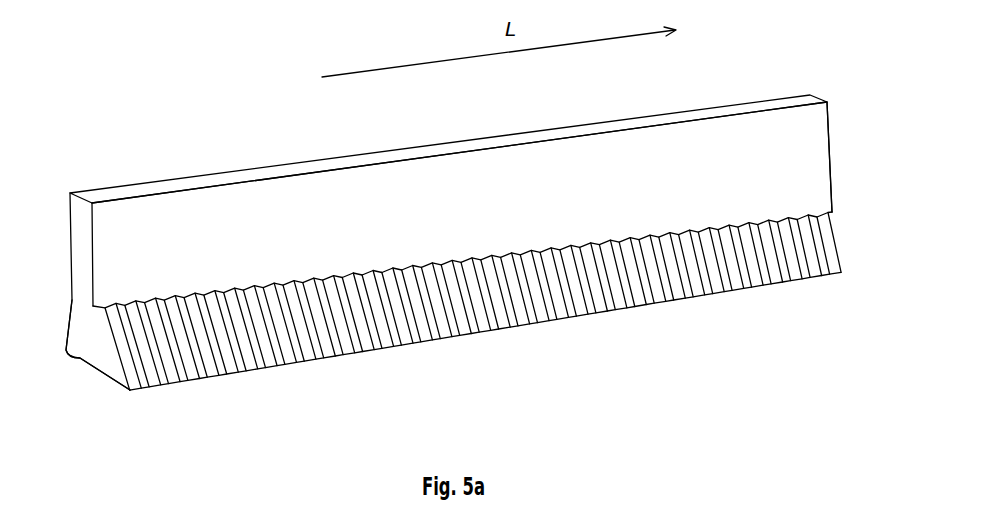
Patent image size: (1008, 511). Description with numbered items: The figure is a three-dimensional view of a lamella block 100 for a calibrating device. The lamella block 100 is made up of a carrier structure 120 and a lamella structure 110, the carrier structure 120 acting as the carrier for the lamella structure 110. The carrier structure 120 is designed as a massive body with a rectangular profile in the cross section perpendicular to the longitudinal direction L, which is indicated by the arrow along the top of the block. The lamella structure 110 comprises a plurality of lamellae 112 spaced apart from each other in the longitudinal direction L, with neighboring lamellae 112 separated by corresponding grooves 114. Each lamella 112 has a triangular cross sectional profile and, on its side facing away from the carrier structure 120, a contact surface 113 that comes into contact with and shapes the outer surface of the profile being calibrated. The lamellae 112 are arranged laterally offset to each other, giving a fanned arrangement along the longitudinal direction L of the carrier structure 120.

The lamella block 100 is at (188, 108).
The carrier structure 120 is at (433, 180).
The lamella structure 110 is at (434, 327).
The lamellae 112 is at (280, 360).
The grooves 114 is at (205, 377).
The contact surface 113 is at (85, 372).